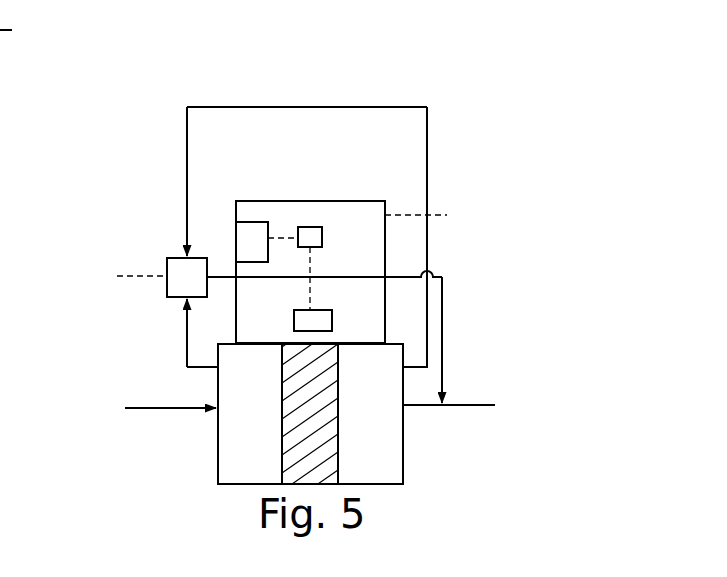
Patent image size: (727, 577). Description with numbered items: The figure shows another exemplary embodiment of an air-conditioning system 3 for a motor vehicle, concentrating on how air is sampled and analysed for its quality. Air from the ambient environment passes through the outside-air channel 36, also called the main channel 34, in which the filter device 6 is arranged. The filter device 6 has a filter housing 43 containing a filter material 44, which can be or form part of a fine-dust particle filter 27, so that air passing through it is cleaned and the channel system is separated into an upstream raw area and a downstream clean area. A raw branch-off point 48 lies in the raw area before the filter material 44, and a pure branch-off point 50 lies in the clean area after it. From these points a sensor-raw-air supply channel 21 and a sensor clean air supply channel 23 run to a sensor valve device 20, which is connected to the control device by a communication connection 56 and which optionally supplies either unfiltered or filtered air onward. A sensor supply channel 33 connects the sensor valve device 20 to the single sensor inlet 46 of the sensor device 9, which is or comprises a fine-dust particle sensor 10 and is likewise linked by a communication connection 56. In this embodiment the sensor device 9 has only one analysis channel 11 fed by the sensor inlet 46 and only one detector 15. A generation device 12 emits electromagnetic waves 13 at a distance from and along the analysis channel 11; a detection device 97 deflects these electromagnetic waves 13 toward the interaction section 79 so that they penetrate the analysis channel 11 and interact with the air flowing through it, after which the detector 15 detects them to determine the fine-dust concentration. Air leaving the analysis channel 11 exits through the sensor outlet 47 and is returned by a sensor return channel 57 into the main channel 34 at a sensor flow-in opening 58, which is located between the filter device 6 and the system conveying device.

The air-conditioning system 3 is at (250, 82).
The filter device 6 is at (328, 417).
The sensor device 9 is at (325, 232).
The fine-dust particle sensor 10 is at (330, 198).
The analysis channel 11 is at (348, 280).
The generation device 12 is at (253, 232).
The electromagnetic waves 13 is at (278, 240).
The detector 15 is at (294, 314).
The sensor valve device 20 is at (185, 257).
The sensor-raw-air supply channel 21 is at (187, 347).
The sensor clean air supply channel 23 is at (428, 115).
The fine-dust particle filter 27 is at (399, 417).
The sensor supply channel 33 is at (223, 272).
The main channel 34 is at (136, 445).
The outside-air channel 36 is at (137, 409).
The filter housing 43 is at (276, 200).
The filter material 44 is at (338, 457).
The sensor inlet 46 is at (233, 280).
The sensor outlet 47 is at (387, 276).
The raw branch-off point 48 is at (219, 348).
The pure branch-off point 50 is at (400, 348).
The communication connection 56 is at (135, 279).
The sensor return channel 57 is at (443, 293).
The sensor flow-in opening 58 is at (447, 403).
The interaction section 79 is at (313, 272).
The detection device 97 is at (309, 227).